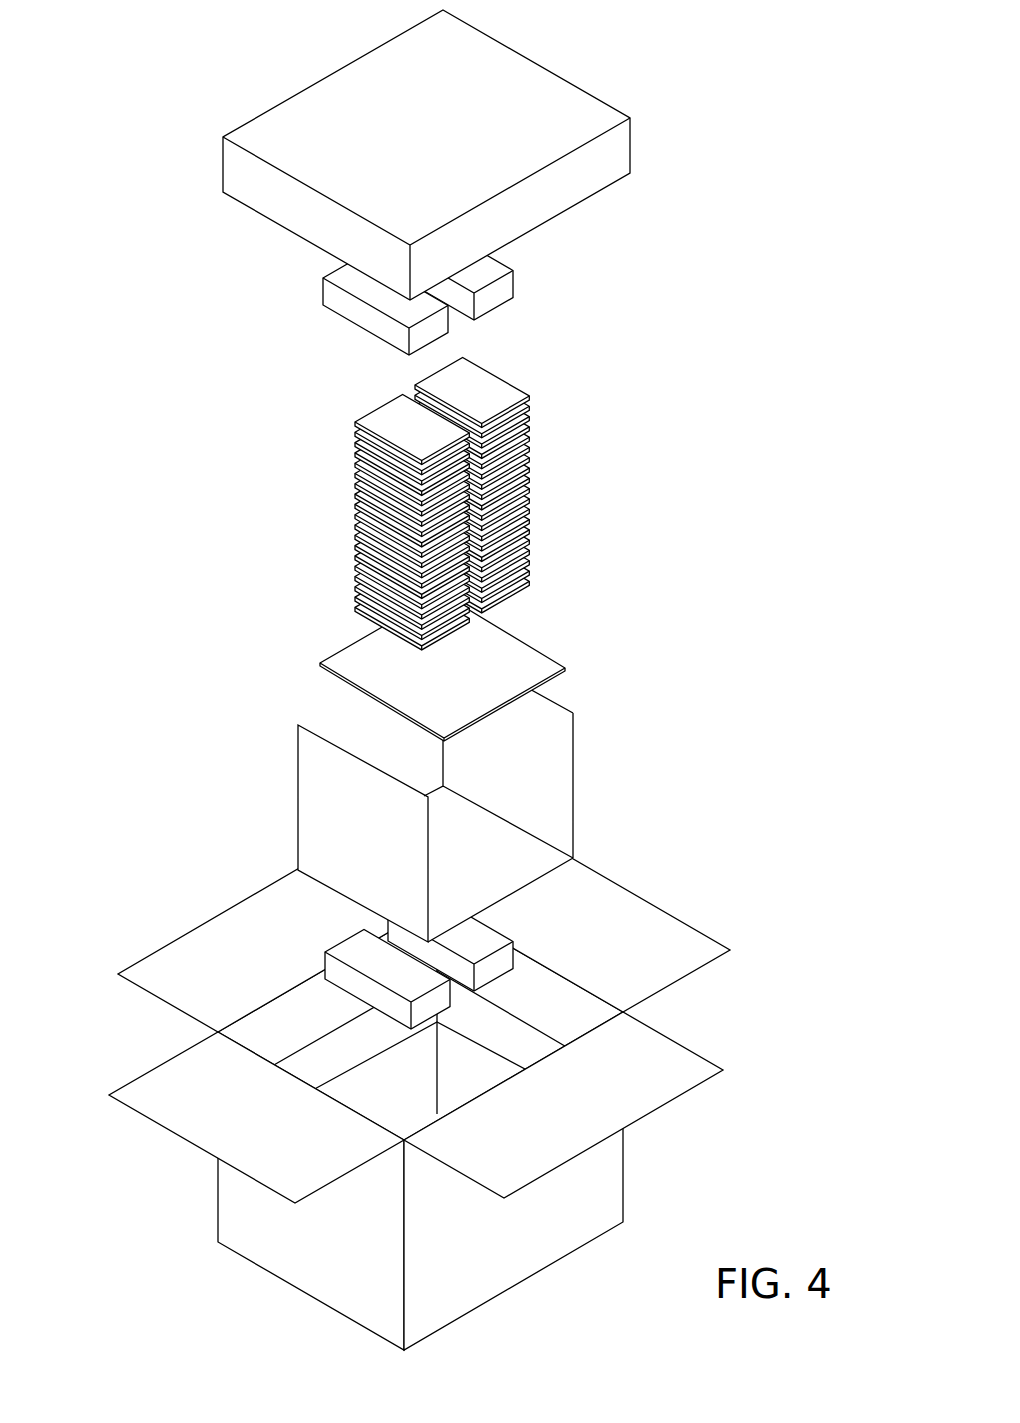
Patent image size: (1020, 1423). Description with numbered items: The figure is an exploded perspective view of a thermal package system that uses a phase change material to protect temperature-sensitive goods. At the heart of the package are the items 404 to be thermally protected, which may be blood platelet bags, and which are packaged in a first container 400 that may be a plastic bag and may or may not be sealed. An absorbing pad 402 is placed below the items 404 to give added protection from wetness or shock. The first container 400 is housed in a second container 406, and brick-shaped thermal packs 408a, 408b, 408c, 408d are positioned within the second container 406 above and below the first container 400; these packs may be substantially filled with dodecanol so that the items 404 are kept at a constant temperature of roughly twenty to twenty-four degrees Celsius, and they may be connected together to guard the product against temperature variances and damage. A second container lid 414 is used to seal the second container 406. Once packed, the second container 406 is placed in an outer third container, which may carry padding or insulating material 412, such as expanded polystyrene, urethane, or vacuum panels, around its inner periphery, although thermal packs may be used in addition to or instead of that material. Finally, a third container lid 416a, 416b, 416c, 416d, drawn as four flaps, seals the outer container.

The first container 400 is at (577, 783).
The absorbing pad 402 is at (557, 663).
The items 404 is at (542, 393).
The second container 406 is at (308, 1069).
The thermal pack 408a is at (494, 945).
The thermal pack 408b is at (363, 955).
The thermal pack 408c is at (505, 287).
The thermal pack 408d is at (346, 306).
The padding or insulating material 412 is at (576, 1016).
The second container lid 414 is at (616, 157).
The third container lid 416a is at (686, 1067).
The third container lid 416b is at (154, 1106).
The third container lid 416c is at (172, 971).
The third container lid 416d is at (659, 917).